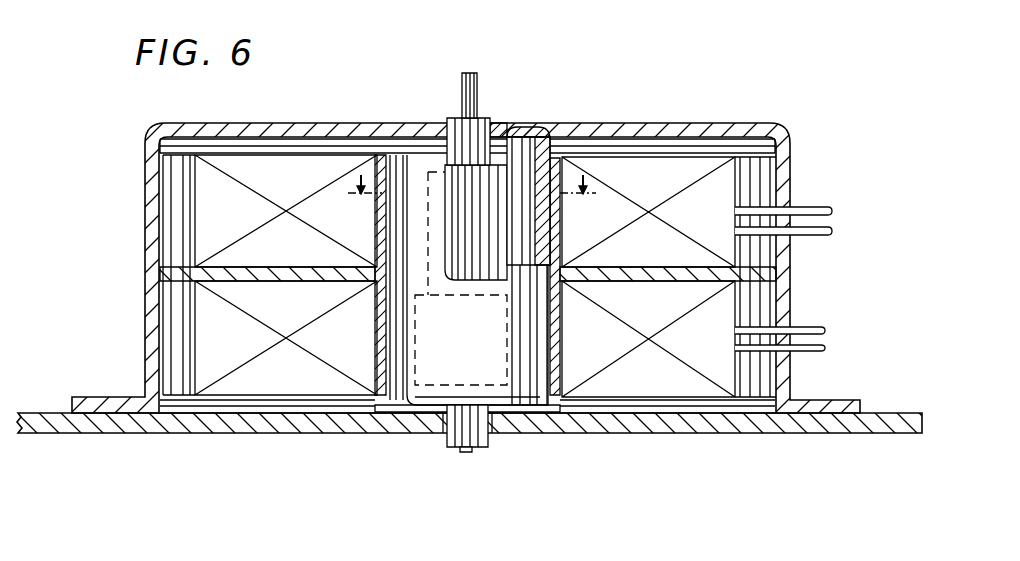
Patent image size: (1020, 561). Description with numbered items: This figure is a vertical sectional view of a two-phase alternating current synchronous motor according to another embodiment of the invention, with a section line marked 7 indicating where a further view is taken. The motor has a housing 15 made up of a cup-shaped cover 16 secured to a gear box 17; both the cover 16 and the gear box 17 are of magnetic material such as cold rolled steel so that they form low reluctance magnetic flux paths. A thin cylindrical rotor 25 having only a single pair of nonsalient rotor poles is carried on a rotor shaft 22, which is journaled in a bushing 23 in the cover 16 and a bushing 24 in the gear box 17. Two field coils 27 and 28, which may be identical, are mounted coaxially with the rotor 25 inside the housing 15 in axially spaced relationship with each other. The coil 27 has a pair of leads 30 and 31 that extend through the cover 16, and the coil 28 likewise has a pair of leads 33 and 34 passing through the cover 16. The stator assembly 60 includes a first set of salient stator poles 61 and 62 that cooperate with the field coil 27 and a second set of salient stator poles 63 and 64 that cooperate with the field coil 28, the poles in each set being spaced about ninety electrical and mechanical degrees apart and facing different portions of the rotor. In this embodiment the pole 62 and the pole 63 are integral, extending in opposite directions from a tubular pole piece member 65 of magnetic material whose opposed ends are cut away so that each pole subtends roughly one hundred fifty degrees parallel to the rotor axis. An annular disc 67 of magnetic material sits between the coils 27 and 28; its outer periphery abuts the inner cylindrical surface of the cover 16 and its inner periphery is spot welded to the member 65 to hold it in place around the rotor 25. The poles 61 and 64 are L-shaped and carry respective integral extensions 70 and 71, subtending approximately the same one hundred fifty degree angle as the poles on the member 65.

The motor housing 15 is at (466, 287).
The cup-shaped cover 16 is at (155, 136).
The gear box 17 is at (36, 412).
The rotor shaft 22 is at (470, 453).
The bushing 23 is at (447, 125).
The bushing 24 is at (450, 440).
The rotor 25 is at (532, 137).
The field coil 27 is at (268, 150).
The field coil 28 is at (195, 333).
The lead 30 is at (822, 207).
The lead 31 is at (822, 235).
The lead 33 is at (826, 329).
The lead 34 is at (815, 352).
The stator assembly 60 is at (578, 181).
The salient stator pole 61 is at (560, 240).
The salient stator pole 62 is at (377, 180).
The salient stator pole 63 is at (577, 432).
The salient stator pole 64 is at (373, 420).
The tubular pole piece member 65 is at (387, 306).
The annular disc 67 is at (740, 278).
The integral extension 70 is at (499, 125).
The integral extension 71 is at (531, 437).
The section line FIG. 7 is at (472, 203).